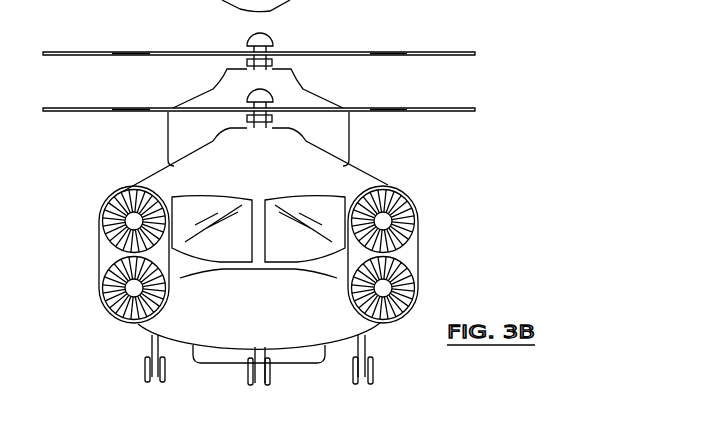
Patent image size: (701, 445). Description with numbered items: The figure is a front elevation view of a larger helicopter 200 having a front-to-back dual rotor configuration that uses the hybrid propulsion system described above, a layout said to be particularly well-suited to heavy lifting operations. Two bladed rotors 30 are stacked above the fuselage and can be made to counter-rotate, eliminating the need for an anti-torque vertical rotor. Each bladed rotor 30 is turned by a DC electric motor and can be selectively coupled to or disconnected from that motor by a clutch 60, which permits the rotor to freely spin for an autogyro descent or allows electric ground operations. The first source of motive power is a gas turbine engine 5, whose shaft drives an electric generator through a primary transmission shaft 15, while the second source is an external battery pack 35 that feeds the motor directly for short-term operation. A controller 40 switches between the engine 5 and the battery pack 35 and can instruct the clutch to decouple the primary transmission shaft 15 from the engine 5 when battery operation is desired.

The gas turbine engine 5 is at (102, 203).
The primary transmission shaft 15 is at (124, 205).
The bladed rotor 30 is at (248, 37).
The external battery pack 35 is at (218, 358).
The controller 40 is at (355, 372).
The clutch 60 is at (250, 60).
The helicopter 200 is at (353, 180).